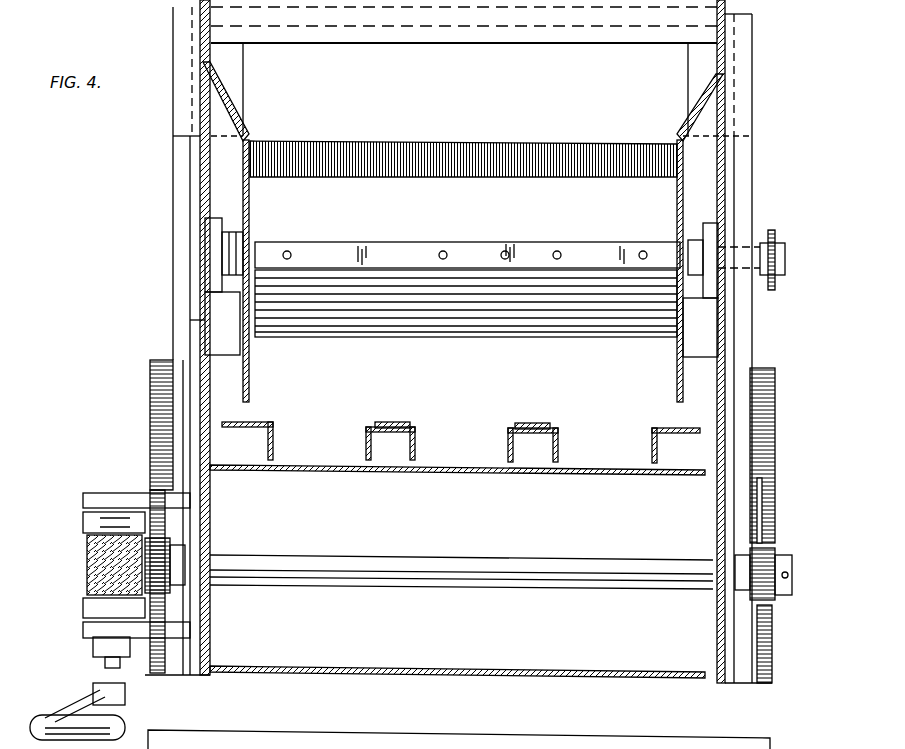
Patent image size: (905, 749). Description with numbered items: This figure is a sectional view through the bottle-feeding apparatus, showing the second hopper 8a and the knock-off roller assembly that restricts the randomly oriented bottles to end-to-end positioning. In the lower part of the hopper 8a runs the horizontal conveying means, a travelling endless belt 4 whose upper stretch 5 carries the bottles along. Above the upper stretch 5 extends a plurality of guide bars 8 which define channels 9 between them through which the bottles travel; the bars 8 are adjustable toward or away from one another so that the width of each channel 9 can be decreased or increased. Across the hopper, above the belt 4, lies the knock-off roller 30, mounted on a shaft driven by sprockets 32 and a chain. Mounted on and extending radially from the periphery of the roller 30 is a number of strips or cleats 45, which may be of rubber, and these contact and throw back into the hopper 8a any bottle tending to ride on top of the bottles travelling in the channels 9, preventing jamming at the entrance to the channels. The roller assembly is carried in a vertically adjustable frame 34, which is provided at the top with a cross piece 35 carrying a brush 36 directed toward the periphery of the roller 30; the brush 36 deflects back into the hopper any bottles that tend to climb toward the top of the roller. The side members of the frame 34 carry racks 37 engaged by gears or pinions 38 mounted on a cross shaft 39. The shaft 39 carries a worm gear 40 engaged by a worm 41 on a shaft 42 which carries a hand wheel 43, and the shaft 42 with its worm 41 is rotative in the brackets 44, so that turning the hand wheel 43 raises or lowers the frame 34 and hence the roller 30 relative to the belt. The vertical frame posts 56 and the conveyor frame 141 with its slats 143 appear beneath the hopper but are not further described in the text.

The endless belt 4 is at (572, 672).
The upper stretch 5 is at (625, 475).
The guide bars 8 is at (365, 440).
The second hopper 8a is at (724, 168).
The channels 9 is at (311, 442).
The knock-off roller 30 is at (487, 338).
The sprockets 32 is at (776, 234).
The vertically adjustable frame 34 is at (190, 312).
The cross piece 35 is at (500, 80).
The brush 36 is at (517, 160).
The racks 37 is at (155, 430).
The gears or pinions 38 is at (195, 556).
The cross shaft 39 is at (445, 560).
The worm gear 40 is at (115, 512).
The worm 41 is at (90, 568).
The shaft 42 is at (92, 660).
The hand wheel 43 is at (77, 716).
The brackets 44 is at (83, 503).
The strips or cleats 45 is at (497, 244).
The frame post 56 is at (212, 626).
The conveyor frame 141 is at (685, 748).
The conveyor slat 143 is at (325, 748).